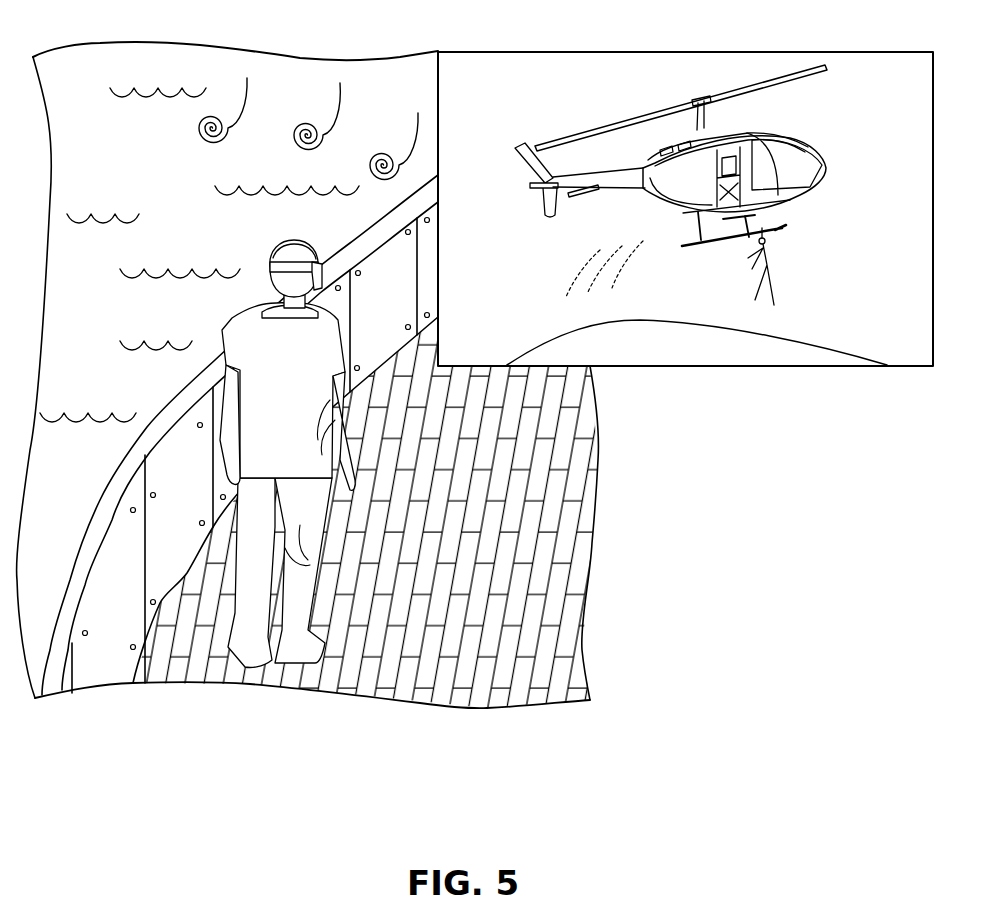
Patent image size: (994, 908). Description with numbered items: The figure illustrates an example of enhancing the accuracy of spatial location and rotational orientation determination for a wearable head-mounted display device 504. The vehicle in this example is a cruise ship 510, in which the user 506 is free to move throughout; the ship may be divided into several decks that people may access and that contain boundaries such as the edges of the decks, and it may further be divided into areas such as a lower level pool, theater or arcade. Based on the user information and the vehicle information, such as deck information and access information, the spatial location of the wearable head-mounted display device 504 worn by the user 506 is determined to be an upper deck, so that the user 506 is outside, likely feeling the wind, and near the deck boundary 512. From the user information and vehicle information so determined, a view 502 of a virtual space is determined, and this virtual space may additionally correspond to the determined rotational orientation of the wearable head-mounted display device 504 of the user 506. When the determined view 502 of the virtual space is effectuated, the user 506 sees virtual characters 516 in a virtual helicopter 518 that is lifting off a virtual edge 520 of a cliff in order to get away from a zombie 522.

The view of a virtual space 502 is at (552, 50).
The wearable head-mounted display device 504 is at (270, 265).
The user 506 is at (298, 248).
The cruise ship 510 is at (532, 633).
The deck boundary 512 is at (175, 410).
The virtual characters 516 is at (738, 167).
The virtual helicopter 518 is at (699, 181).
The virtual edge of a cliff 520 is at (670, 356).
The zombie 522 is at (764, 272).